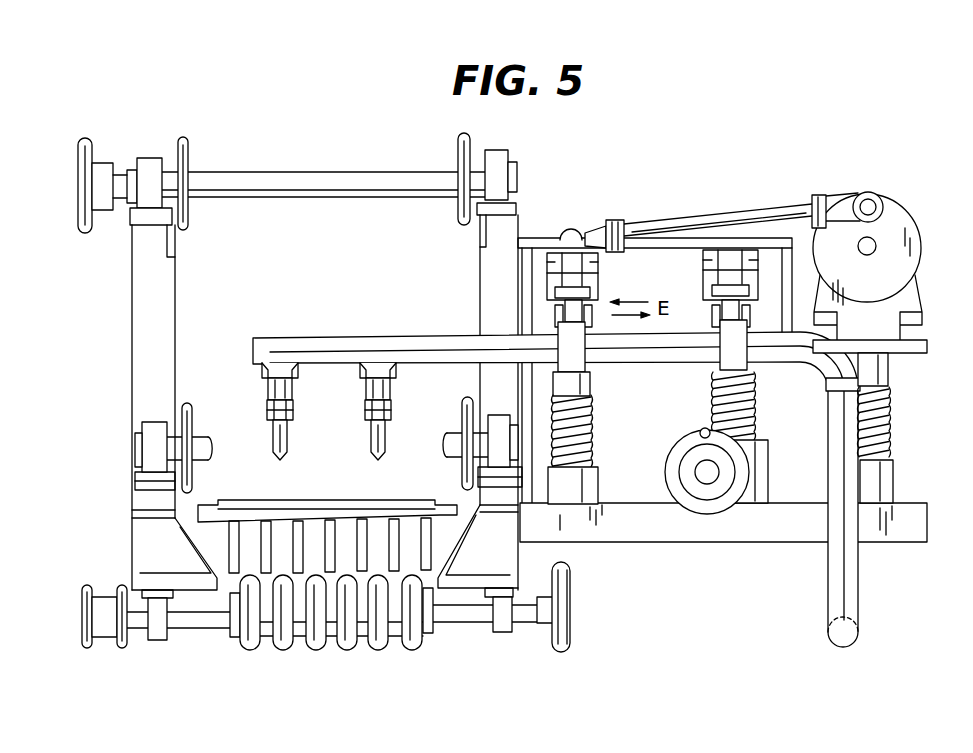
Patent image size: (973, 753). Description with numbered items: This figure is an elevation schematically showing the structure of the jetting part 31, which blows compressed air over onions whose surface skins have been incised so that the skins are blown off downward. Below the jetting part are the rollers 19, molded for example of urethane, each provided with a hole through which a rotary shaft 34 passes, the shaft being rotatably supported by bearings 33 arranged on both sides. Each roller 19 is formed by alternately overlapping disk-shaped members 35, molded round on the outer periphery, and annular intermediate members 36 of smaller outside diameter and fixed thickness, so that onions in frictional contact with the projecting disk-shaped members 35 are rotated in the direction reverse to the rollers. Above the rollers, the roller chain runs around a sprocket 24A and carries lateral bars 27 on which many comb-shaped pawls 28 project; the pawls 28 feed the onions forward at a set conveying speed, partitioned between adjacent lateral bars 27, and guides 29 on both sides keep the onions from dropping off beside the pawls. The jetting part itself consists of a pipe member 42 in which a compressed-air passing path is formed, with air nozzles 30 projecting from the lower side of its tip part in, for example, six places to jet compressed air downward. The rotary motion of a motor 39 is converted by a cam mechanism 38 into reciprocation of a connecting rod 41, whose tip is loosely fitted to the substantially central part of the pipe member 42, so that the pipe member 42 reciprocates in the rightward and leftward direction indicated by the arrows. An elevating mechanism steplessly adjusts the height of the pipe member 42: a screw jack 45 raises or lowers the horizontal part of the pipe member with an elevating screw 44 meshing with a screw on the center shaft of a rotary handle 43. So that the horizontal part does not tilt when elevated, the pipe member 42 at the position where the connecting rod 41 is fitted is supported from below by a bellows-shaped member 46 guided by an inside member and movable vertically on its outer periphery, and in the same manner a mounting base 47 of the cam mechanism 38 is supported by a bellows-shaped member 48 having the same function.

The roller 19 is at (380, 654).
The sprocket 24A is at (102, 163).
The lateral bar 27 is at (242, 500).
The comb-shaped pawl 28 is at (237, 574).
The guide 29 is at (190, 540).
The air nozzle 30 is at (369, 434).
The jetting part 31 is at (643, 212).
The bearing 33 is at (158, 641).
The rotary shaft 34 is at (472, 623).
The disk-shaped member 35 is at (282, 651).
The annular intermediate member 36 is at (339, 651).
The cam mechanism 38 is at (843, 189).
The motor 39 is at (895, 200).
The connecting rod 41 is at (738, 221).
The pipe member 42 is at (422, 347).
The rotary handle 43 is at (717, 515).
The elevating screw 44 is at (760, 410).
The screw jack 45 is at (691, 514).
The bellows-shaped member 46 is at (592, 428).
The mounting base 47 is at (916, 347).
The bellows-shaped member 48 is at (888, 424).